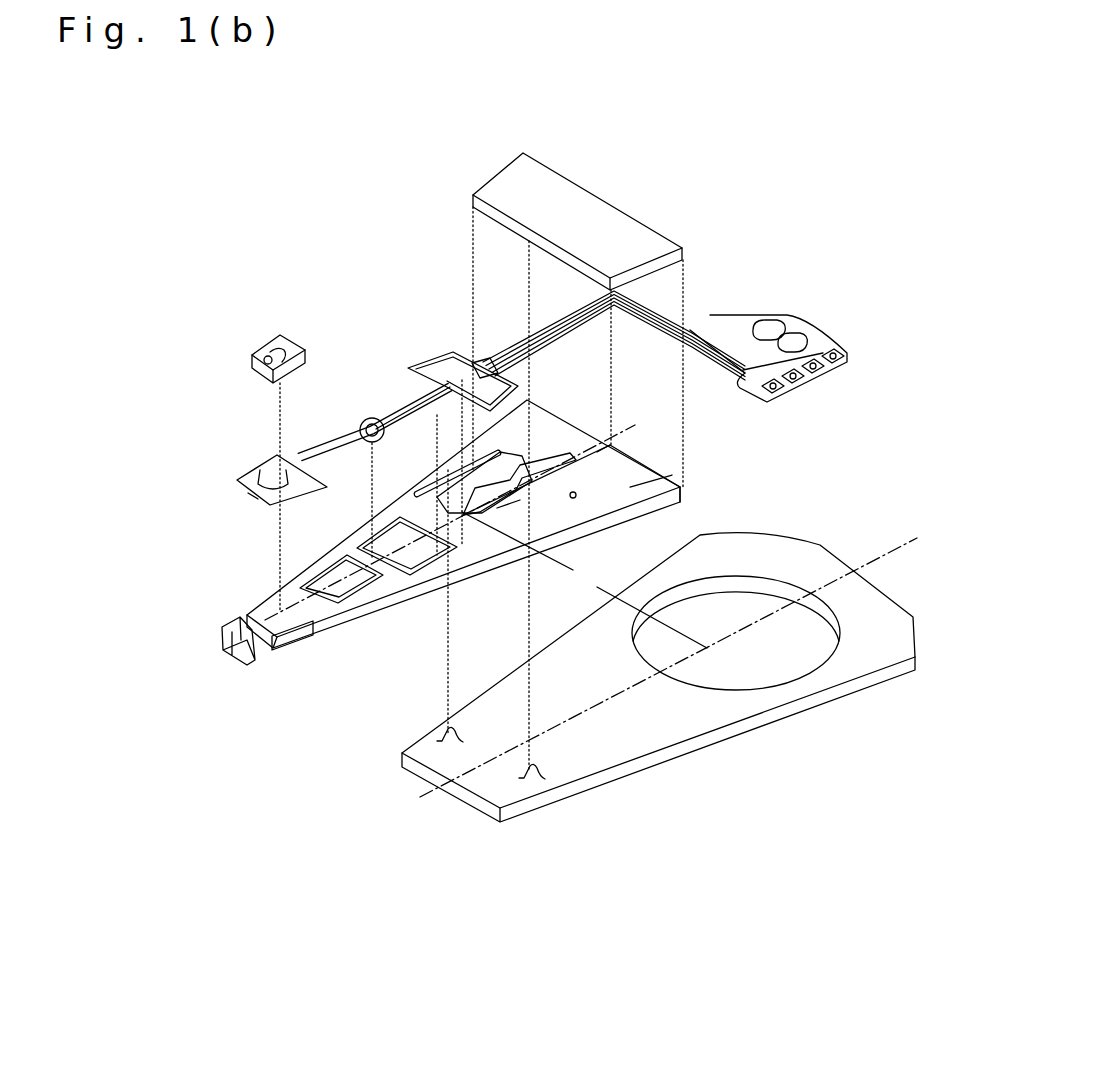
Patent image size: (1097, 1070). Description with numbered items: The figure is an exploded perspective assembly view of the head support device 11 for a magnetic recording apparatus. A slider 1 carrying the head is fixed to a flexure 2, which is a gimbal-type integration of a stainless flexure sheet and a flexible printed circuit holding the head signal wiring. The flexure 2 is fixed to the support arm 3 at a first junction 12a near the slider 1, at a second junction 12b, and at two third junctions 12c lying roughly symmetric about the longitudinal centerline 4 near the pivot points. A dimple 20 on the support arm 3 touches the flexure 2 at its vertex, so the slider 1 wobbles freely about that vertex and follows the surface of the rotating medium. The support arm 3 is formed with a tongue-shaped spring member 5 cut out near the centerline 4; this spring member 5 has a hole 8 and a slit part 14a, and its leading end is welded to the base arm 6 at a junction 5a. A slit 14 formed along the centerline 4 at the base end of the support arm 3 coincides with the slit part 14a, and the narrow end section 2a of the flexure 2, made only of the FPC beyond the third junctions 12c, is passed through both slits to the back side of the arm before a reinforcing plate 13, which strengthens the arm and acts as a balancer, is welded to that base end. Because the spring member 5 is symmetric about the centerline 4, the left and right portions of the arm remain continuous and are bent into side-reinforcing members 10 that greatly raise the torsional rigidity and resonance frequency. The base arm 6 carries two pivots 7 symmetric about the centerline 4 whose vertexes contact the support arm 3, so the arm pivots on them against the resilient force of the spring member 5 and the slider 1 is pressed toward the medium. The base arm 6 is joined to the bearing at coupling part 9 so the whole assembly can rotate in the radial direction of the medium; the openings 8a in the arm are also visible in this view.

The slider 1 is at (262, 352).
The flexure 2 is at (265, 468).
The end section 2a is at (578, 328).
The support arm 3 is at (362, 592).
The longitudinal centerline 4 is at (584, 580).
The spring member 5 is at (485, 525).
The junction 5a is at (462, 518).
The base arm 6 is at (602, 648).
The pivots 7 is at (522, 778).
The hole 8 is at (482, 503).
The window openings 8a is at (413, 547).
The coupling part 9 is at (780, 582).
The side-reinforcing members 10 is at (680, 497).
The head support device 11 is at (338, 231).
The first junction 12a is at (365, 420).
The second junction 12b is at (428, 368).
The third junctions 12c is at (490, 360).
The reinforcing plate 13 is at (622, 242).
The slit 14 is at (597, 452).
The slit part 14a is at (497, 508).
The dimple 20 is at (265, 615).